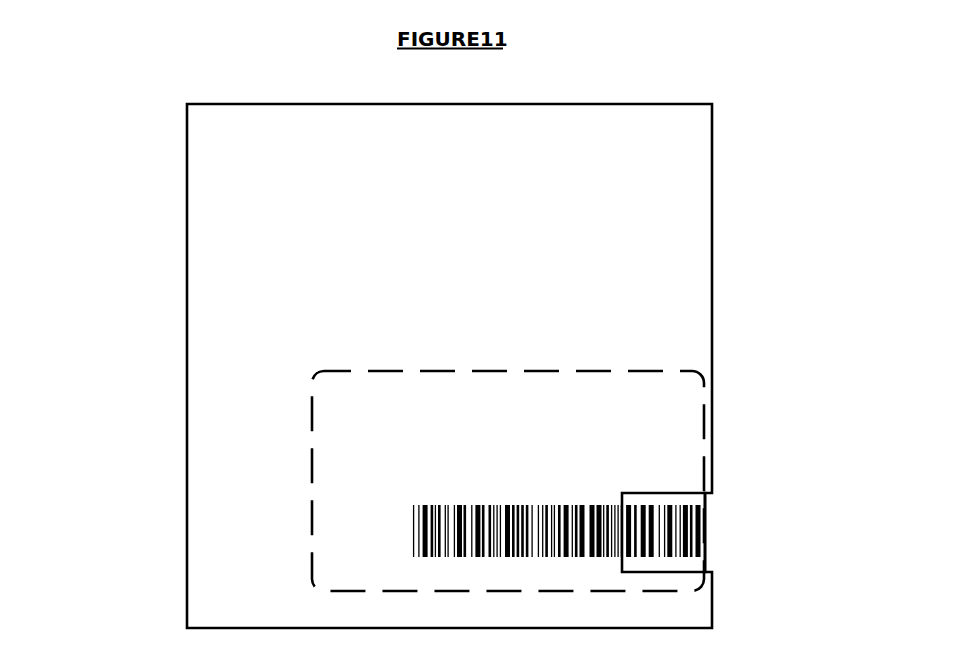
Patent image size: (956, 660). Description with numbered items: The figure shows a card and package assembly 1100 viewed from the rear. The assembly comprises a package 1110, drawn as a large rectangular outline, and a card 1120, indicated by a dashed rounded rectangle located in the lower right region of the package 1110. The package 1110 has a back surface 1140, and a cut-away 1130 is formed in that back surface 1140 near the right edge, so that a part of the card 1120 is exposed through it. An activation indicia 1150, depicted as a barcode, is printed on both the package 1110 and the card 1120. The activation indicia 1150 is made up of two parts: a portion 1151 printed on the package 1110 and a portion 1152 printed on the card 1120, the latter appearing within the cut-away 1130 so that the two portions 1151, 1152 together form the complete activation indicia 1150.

The card and package assembly 1100 is at (158, 372).
The package 1110 is at (713, 283).
The card 1120 is at (644, 371).
The cut-away 1130 is at (689, 568).
The back surface 1140 is at (262, 146).
The activation indicia 1150 is at (503, 447).
The portion printed on the package 1151 is at (440, 503).
The portion printed on the card 1152 is at (668, 503).